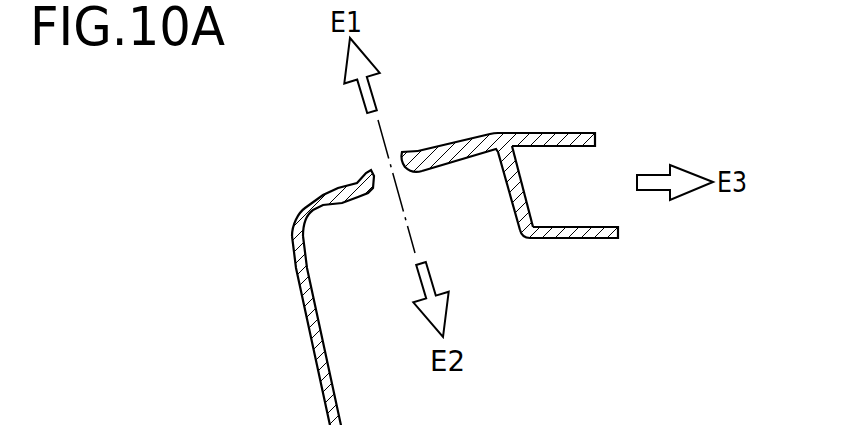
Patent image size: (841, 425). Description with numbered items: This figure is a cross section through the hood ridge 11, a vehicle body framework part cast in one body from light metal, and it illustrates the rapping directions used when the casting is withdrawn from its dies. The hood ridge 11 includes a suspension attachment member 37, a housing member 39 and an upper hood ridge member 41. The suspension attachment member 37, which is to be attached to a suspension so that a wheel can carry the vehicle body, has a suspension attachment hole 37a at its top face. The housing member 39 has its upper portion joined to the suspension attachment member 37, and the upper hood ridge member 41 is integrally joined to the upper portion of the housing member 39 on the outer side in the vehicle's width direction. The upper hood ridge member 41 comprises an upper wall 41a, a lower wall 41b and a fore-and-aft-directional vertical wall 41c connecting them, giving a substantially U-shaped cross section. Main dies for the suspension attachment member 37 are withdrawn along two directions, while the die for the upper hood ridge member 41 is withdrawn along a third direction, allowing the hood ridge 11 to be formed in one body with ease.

The hood ridge 11 is at (477, 112).
The suspension attachment member 37 is at (335, 183).
The suspension attachment hole 37a is at (402, 152).
The housing member 39 is at (310, 343).
The upper hood ridge member 41 is at (547, 133).
The upper wall 41a is at (583, 135).
The lower wall 41b is at (607, 238).
The vertical wall 41c is at (505, 210).